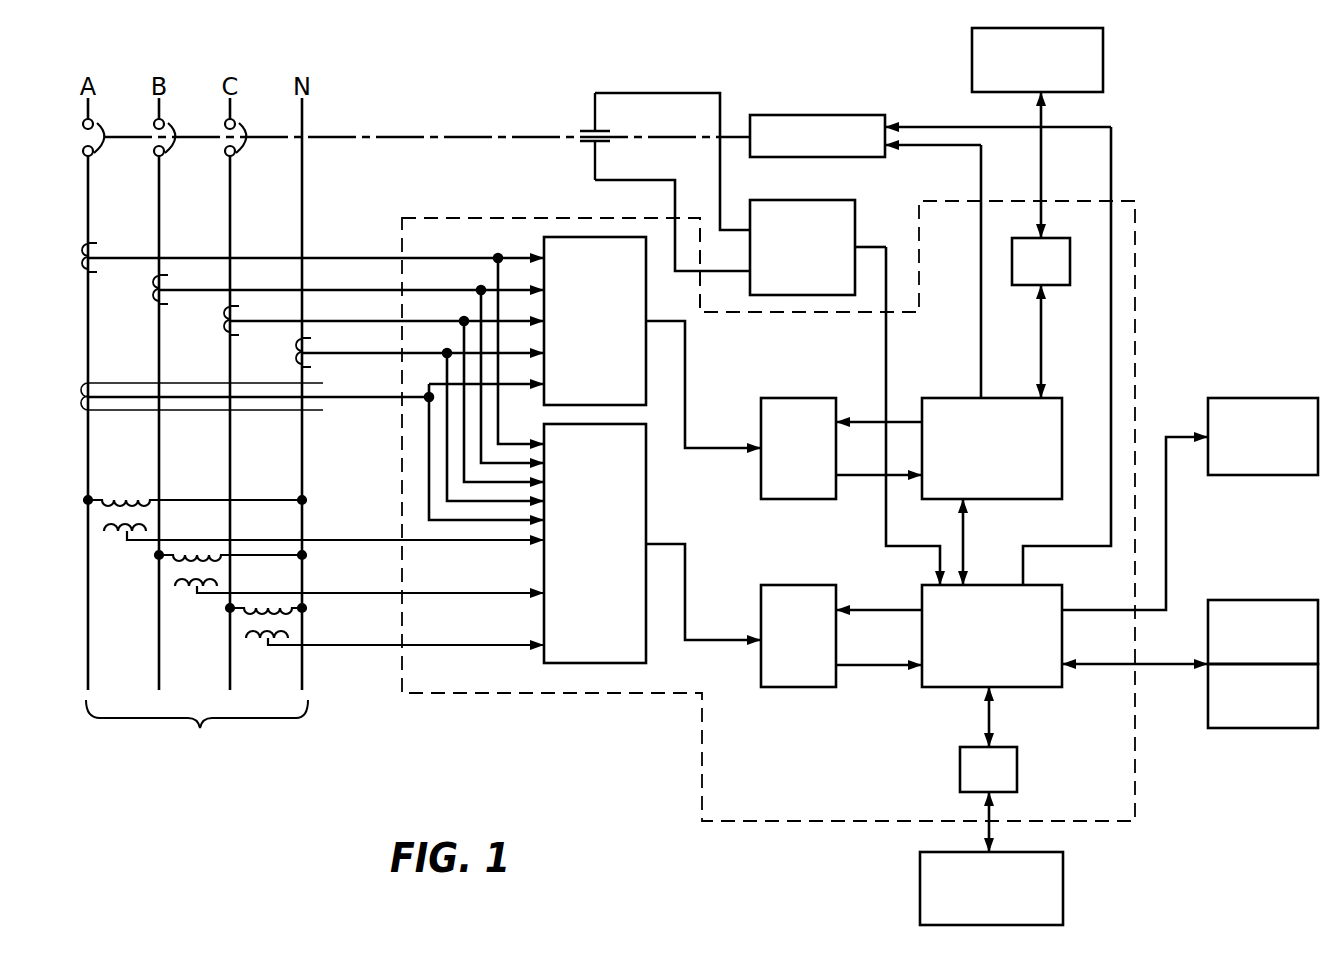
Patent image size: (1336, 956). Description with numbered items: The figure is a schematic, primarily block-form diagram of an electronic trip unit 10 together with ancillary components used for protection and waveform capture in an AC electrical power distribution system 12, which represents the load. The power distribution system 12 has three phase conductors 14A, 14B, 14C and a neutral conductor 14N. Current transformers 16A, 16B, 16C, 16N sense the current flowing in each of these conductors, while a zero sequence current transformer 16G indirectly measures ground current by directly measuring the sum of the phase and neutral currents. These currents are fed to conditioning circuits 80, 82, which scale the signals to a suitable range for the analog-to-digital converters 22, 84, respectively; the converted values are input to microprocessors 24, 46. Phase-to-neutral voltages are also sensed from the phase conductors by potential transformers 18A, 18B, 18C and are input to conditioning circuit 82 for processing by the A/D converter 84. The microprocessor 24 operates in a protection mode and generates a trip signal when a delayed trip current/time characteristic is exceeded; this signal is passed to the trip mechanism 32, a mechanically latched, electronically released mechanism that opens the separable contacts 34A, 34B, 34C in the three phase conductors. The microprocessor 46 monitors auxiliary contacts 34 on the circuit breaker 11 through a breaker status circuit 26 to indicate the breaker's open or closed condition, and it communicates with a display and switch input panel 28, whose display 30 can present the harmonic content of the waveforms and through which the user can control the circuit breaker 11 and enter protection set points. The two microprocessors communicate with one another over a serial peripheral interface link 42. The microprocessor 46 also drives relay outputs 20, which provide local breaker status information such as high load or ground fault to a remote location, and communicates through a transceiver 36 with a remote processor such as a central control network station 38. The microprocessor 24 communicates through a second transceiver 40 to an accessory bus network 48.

The electronic trip unit 10 is at (786, 550).
The circuit breaker 11 is at (431, 183).
The power distribution system 12 is at (197, 733).
The phase conductor 14A is at (86, 680).
The phase conductor 14B is at (157, 683).
The phase conductor 14C is at (228, 686).
The neutral conductor 14N is at (304, 670).
The current transformer 16A is at (82, 262).
The current transformer 16B is at (152, 295).
The current transformer 16C is at (223, 326).
The current transformer 16N is at (295, 362).
The zero sequence transformer 16G is at (84, 400).
The potential transformer 18A is at (112, 535).
The potential transformer 18B is at (183, 590).
The potential transformer 18C is at (300, 628).
The relay outputs 20 is at (1272, 398).
The analog-to-digital converter 22 is at (797, 398).
The microprocessor 24 is at (1008, 398).
The breaker status circuit 26 is at (795, 200).
The display and switch input panel 28 is at (1248, 728).
The display 30 is at (1258, 600).
The trip mechanism 32 is at (801, 115).
The auxiliary contacts 34 is at (610, 136).
The separable contact 34A is at (103, 128).
The separable contact 34B is at (175, 128).
The separable contact 34C is at (246, 128).
The transceiver 36 is at (1017, 772).
The central control network station 38 is at (1063, 890).
The second transceiver 40 is at (1060, 286).
The serial peripheral interface link 42 is at (968, 541).
The microprocessor 46 is at (1022, 687).
The accessory bus network 48 is at (1103, 63).
The conditioning circuit 80 is at (581, 337).
The conditioning circuit 82 is at (581, 557).
The analog-to-digital converter 84 is at (790, 687).